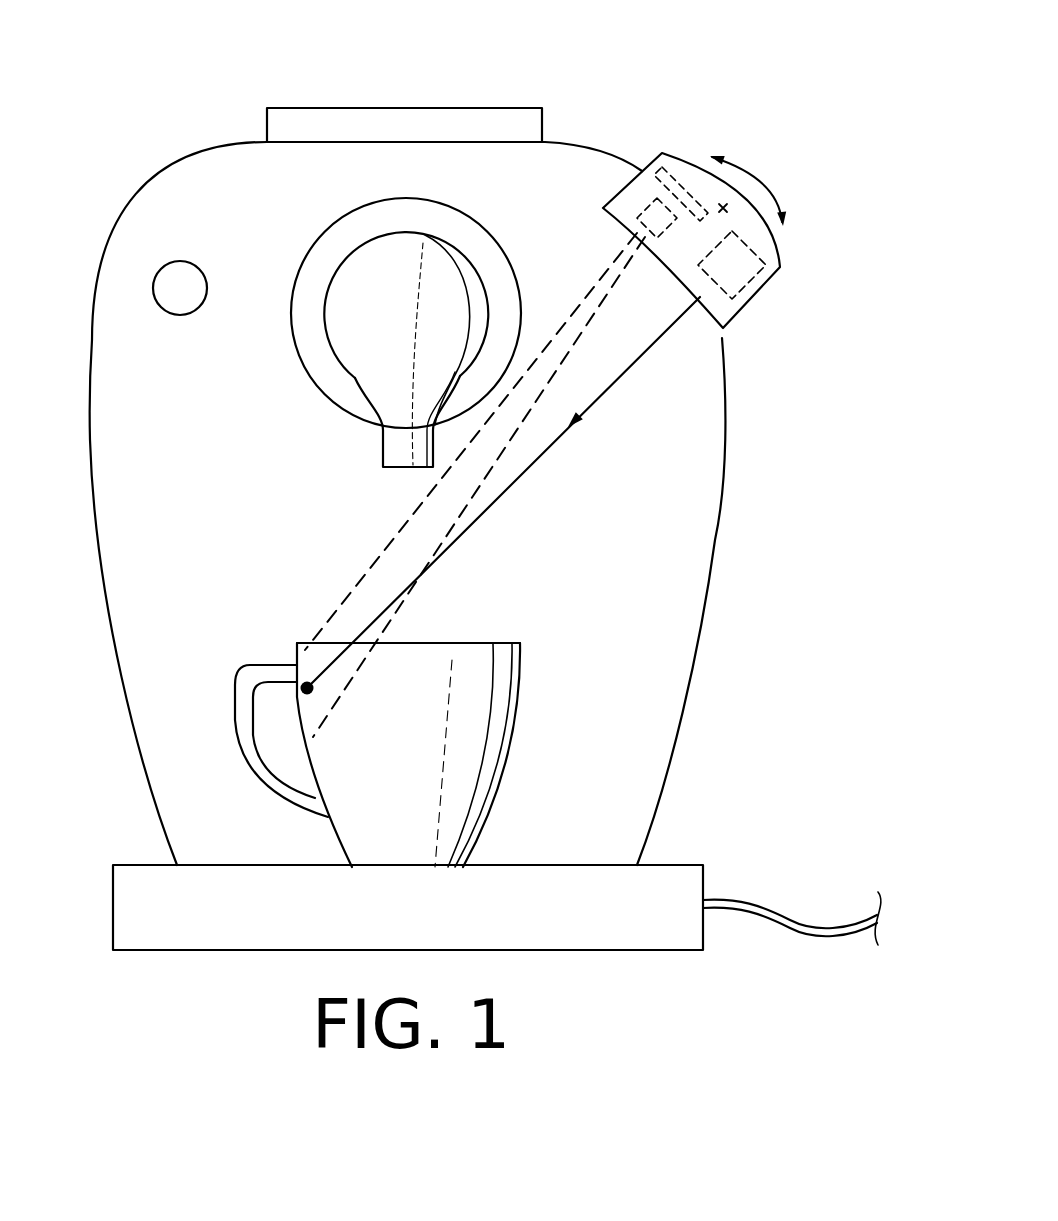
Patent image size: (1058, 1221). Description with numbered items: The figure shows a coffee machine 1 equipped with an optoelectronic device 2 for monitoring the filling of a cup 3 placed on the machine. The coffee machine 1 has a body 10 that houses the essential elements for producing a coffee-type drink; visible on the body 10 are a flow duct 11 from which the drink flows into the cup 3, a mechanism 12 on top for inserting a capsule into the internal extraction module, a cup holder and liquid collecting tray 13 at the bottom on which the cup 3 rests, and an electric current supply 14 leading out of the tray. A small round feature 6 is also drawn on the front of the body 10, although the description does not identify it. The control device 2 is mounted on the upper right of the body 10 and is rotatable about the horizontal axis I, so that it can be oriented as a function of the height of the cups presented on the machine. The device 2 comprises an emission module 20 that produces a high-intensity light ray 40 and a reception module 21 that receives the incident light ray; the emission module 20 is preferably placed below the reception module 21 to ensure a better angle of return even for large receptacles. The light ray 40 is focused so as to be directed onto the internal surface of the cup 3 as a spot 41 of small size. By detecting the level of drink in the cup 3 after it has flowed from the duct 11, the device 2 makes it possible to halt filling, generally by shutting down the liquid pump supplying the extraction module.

The coffee machine 1 is at (760, 488).
The body 10 is at (710, 596).
The flow duct 11 is at (382, 452).
The mechanism for inserting the capsule 12 is at (512, 102).
The cup holder and liquid collecting tray 13 is at (685, 968).
The electric current supply 14 is at (777, 920).
The optoelectronic device 2 is at (737, 207).
The emission module 20 is at (761, 265).
The reception module 21 is at (681, 179).
The horizontal axis I is at (752, 191).
The light ray 40 is at (583, 430).
The spot 41 is at (305, 686).
The cup 3 is at (226, 735).
The indicator / control button 6 is at (150, 266).